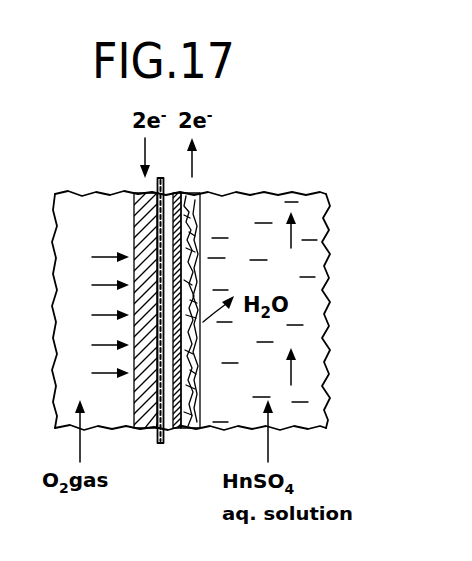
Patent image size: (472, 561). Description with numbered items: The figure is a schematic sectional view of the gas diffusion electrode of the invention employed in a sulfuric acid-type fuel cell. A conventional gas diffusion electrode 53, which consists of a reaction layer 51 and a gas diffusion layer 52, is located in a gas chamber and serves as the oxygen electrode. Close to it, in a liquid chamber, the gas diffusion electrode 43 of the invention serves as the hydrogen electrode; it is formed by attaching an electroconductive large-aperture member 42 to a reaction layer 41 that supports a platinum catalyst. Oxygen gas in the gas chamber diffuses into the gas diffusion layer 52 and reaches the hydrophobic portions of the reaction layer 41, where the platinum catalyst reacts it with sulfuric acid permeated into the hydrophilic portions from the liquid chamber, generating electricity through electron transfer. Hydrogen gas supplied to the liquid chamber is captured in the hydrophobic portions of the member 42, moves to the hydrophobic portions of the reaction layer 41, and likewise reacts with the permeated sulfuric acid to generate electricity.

The reaction layer 41 is at (177, 193).
The electroconductive large-aperture member 42 is at (198, 212).
The gas diffusion electrode 43 is at (214, 218).
The reaction layer 51 is at (160, 445).
The gas diffusion layer 52 is at (136, 352).
The conventional gas diffusion electrode 53 is at (128, 222).